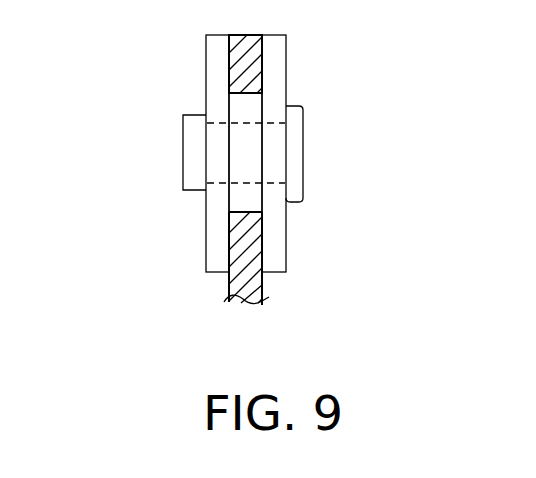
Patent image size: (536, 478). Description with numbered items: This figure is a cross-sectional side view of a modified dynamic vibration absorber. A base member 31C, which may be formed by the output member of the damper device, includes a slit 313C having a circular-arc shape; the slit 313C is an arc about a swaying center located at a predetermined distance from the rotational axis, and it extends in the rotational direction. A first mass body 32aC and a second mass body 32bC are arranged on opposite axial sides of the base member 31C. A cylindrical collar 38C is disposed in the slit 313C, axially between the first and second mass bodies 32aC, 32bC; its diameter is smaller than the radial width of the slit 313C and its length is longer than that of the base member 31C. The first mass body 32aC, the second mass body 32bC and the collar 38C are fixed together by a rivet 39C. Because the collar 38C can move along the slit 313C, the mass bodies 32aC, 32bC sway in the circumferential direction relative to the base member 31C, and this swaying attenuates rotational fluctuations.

The first mass body 32aC is at (218, 46).
The second mass body 32bC is at (278, 55).
The slit 313C is at (246, 94).
The rivet 39C is at (290, 112).
The collar 38C is at (242, 200).
The base member 31C is at (253, 288).